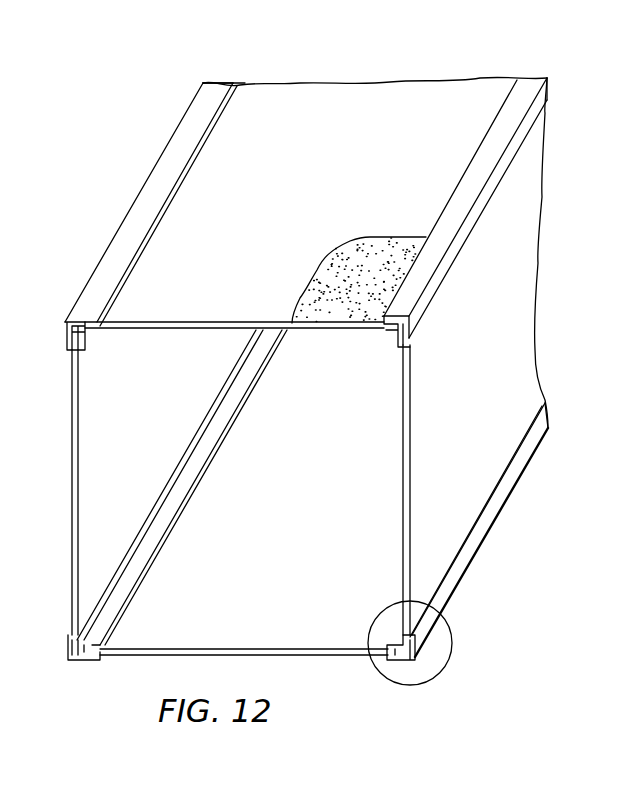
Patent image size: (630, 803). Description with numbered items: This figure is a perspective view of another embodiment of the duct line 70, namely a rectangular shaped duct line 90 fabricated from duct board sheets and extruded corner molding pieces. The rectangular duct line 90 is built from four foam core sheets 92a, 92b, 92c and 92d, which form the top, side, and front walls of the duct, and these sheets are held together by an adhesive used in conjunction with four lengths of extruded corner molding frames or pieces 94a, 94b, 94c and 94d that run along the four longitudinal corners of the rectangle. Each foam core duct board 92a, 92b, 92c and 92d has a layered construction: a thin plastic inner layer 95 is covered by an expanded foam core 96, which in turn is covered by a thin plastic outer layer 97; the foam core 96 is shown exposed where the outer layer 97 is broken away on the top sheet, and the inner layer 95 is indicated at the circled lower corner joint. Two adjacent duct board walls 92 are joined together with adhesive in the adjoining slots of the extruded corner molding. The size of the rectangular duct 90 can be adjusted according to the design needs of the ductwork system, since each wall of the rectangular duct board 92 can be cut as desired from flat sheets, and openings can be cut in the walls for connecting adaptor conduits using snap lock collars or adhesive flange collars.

The duct line 70 is at (530, 208).
The rectangular shaped duct line 90 is at (423, 93).
The thin plastic outer layer 97 is at (265, 90).
The duct board wall 92 is at (617, 384).
The foam core sheet 92a is at (209, 202).
The foam core sheet 92b is at (471, 372).
The foam core sheet 92c is at (255, 492).
The foam core sheet 92d is at (228, 481).
The extruded corner molding piece 94a is at (549, 95).
The extruded corner molding piece 94b is at (462, 567).
The extruded corner molding piece 94c is at (82, 660).
The extruded corner molding piece 94d is at (147, 193).
The thin plastic inner layer 95 is at (347, 642).
The expanded foam core 96 is at (325, 277).